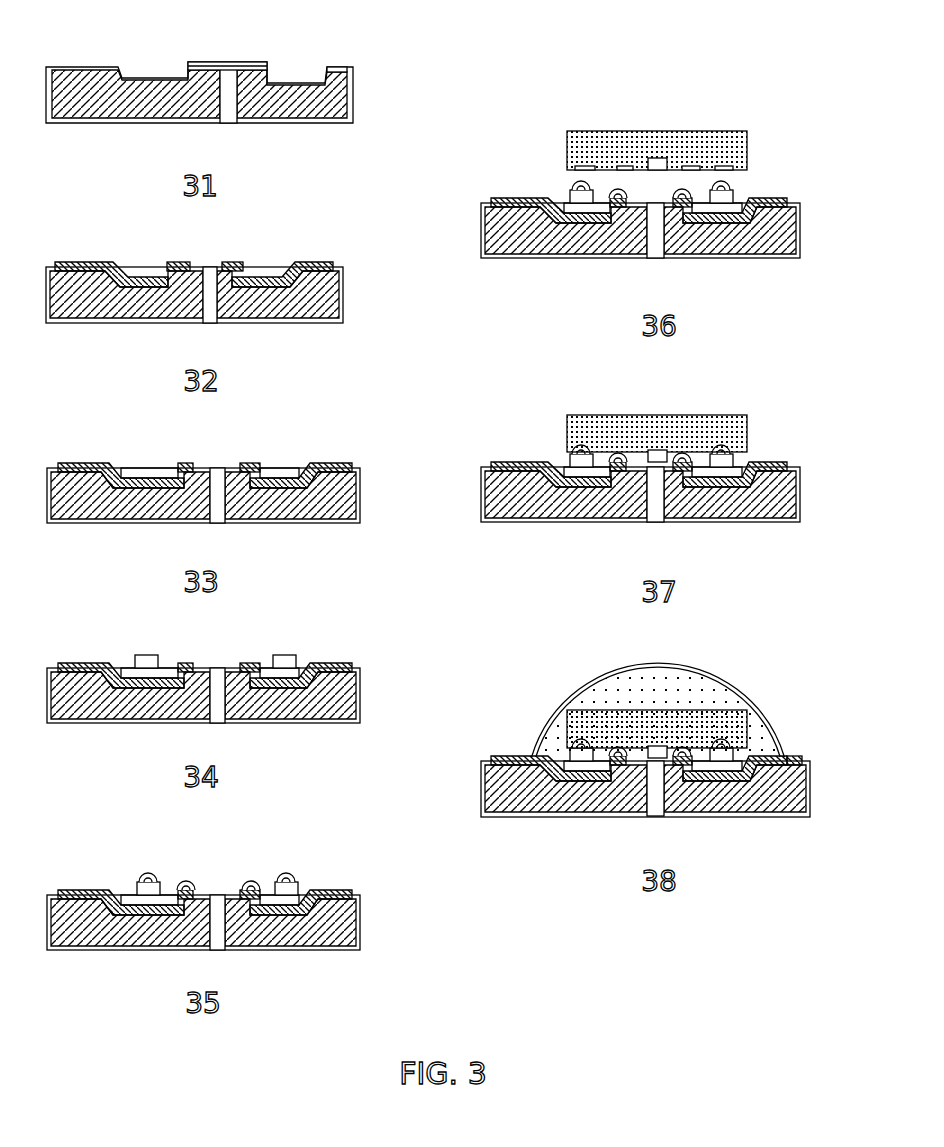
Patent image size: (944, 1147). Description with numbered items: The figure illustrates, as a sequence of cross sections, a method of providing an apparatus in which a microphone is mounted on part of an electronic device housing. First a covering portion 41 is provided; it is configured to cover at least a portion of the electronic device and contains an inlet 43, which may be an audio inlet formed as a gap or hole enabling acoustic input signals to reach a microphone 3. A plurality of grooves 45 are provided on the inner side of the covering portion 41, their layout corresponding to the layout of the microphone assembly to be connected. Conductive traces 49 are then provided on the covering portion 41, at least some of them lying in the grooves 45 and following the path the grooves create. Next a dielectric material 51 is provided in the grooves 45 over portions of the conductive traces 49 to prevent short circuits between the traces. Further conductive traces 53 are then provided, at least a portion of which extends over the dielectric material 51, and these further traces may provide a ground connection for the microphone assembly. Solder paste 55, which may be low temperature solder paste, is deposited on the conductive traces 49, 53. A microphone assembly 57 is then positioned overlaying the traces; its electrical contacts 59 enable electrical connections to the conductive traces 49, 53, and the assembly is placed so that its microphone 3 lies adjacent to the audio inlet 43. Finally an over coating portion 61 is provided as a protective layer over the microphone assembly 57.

The microphone 3 is at (658, 158).
The covering portion 41 is at (353, 97).
The inlet 43 is at (231, 118).
The grooves 45 is at (307, 78).
The conductive traces 49 is at (90, 262).
The dielectric material 51 is at (150, 468).
The further conductive traces 53 is at (147, 655).
The solder paste 55 is at (147, 880).
The microphone assembly 57 is at (733, 131).
The electrical contacts 59 is at (630, 166).
The over coating portion 61 is at (603, 676).